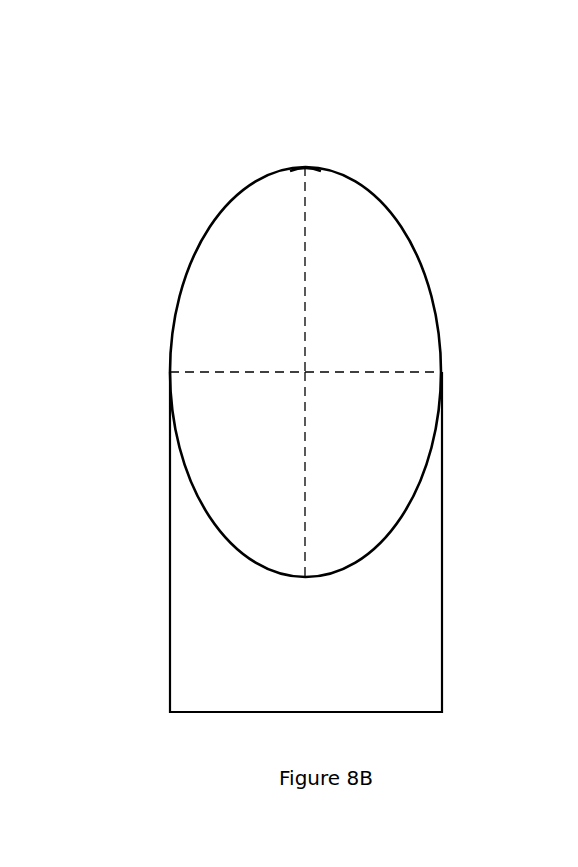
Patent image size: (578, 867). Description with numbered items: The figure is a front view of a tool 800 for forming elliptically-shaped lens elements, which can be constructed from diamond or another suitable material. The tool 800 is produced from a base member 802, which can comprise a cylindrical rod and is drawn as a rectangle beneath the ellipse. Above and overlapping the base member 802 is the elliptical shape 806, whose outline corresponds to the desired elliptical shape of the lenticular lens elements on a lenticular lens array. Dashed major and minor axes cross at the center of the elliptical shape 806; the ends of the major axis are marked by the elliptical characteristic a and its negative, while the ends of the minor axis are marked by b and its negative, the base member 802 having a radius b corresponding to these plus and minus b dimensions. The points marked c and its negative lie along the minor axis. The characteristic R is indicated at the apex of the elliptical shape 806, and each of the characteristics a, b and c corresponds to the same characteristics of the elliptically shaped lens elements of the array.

The tool 800 is at (281, 72).
The elliptical shape 806 is at (192, 255).
The base member 802 is at (170, 688).
The radius of curvature at apex R is at (326, 160).
The elliptical characteristic a is at (302, 167).
The radius b / elliptical characteristic b is at (170, 372).
The elliptical characteristic c is at (262, 372).